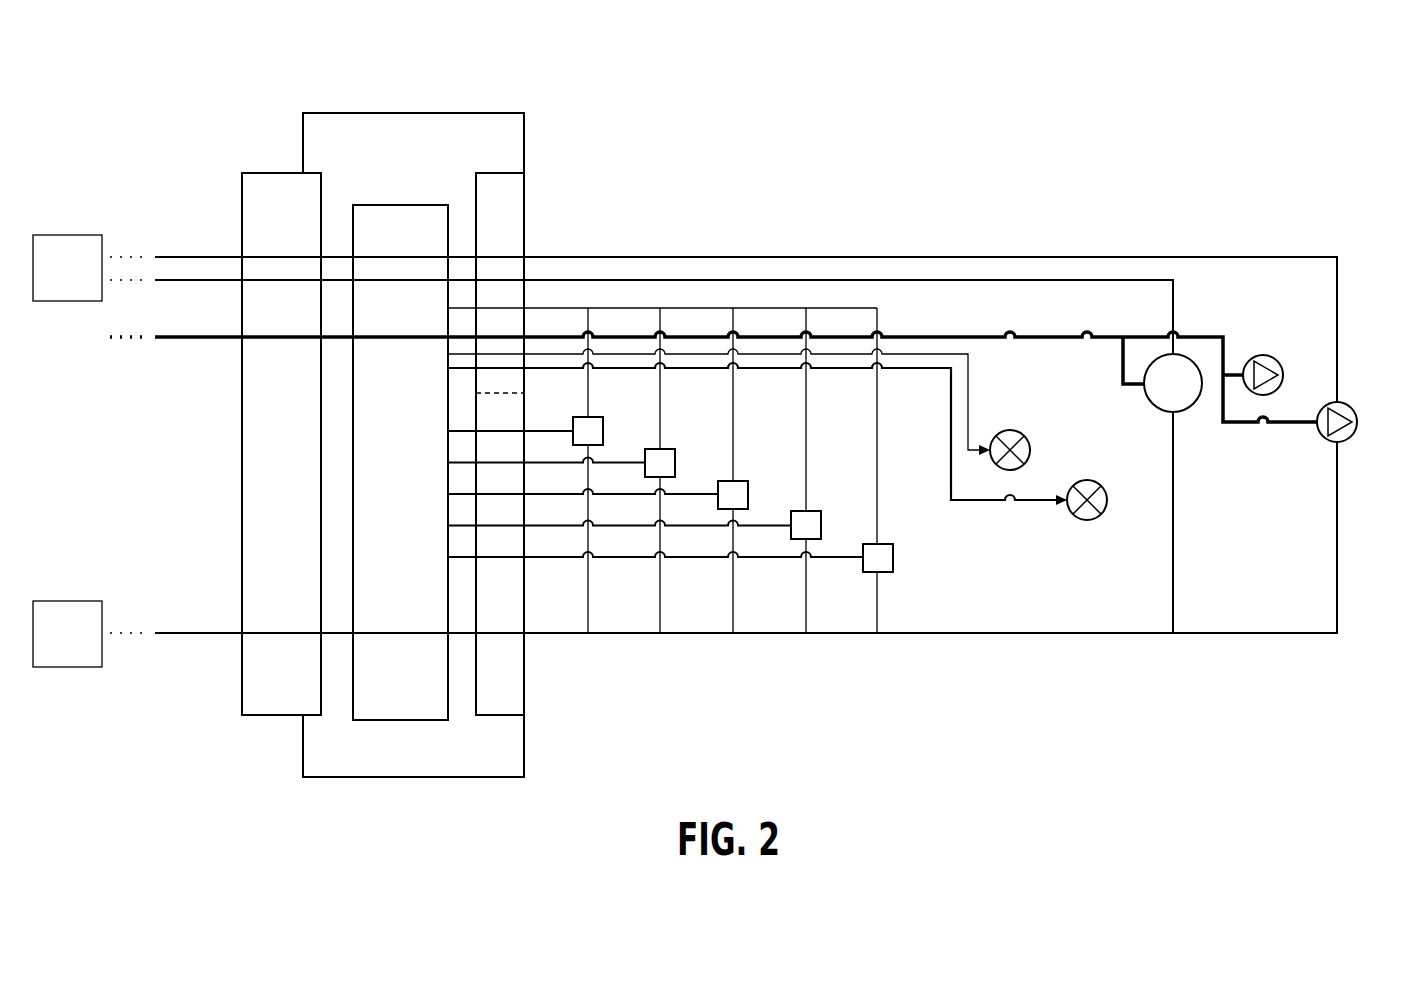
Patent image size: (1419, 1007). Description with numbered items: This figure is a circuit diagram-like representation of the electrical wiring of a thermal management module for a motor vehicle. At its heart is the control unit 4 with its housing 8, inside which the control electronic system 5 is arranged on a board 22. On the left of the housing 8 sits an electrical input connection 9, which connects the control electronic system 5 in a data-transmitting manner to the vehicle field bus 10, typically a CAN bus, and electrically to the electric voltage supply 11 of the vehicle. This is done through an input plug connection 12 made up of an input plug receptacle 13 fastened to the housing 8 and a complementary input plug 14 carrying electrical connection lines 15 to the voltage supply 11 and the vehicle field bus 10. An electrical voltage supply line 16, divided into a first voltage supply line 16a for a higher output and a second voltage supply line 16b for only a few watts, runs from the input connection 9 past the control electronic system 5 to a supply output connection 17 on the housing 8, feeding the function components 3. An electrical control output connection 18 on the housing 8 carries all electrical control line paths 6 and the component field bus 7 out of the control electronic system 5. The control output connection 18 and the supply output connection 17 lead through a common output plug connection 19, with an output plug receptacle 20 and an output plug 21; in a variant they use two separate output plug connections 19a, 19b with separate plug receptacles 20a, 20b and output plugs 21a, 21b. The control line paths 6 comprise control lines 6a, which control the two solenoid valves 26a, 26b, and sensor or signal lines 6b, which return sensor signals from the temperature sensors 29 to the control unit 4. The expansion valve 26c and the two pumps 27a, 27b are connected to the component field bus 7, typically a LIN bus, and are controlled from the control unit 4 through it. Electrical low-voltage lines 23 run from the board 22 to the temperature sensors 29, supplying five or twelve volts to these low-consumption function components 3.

The function components 3 is at (992, 438).
The control unit 4 is at (413, 399).
The control electronic system 5 is at (400, 462).
The electrical control line paths 6 is at (720, 470).
The control lines 6a is at (836, 368).
The sensor or signal lines 6b is at (455, 559).
The component field bus 7 is at (1190, 337).
The housing 8 is at (375, 113).
The electrical input connection 9 is at (312, 158).
The vehicle field bus 10 is at (200, 340).
The electric voltage supply 11 is at (81, 279).
The input plug connection 12 is at (290, 165).
The input plug receptacle 13 is at (281, 395).
The input plug 14 is at (293, 463).
The electrical connection lines 15 is at (213, 280).
The electrical voltage supply line 16 is at (723, 434).
The first voltage supply line 16a is at (795, 257).
The second voltage supply line 16b is at (885, 280).
The supply output connection 17 is at (569, 447).
The electrical control output connection 18 is at (569, 447).
The common output plug connection 19 is at (530, 447).
The first output plug connection 19a is at (497, 150).
The second output plug connection 19b is at (497, 742).
The output plug receptacle 20 is at (553, 444).
The first plug receptacle 20a is at (478, 190).
The second plug receptacle 20b is at (480, 697).
The output plug 21 is at (580, 448).
The first output plug 21a is at (510, 237).
The second output plug 21b is at (510, 669).
The board 22 is at (426, 401).
The electrical low-voltage lines 23 is at (710, 308).
The solenoid valve 26a is at (1020, 430).
The solenoid valve 26b is at (1097, 480).
The expansion valve 26c is at (1188, 412).
The pump 27a is at (1265, 355).
The pump 27b is at (1345, 402).
The temperature sensors 29 is at (893, 556).